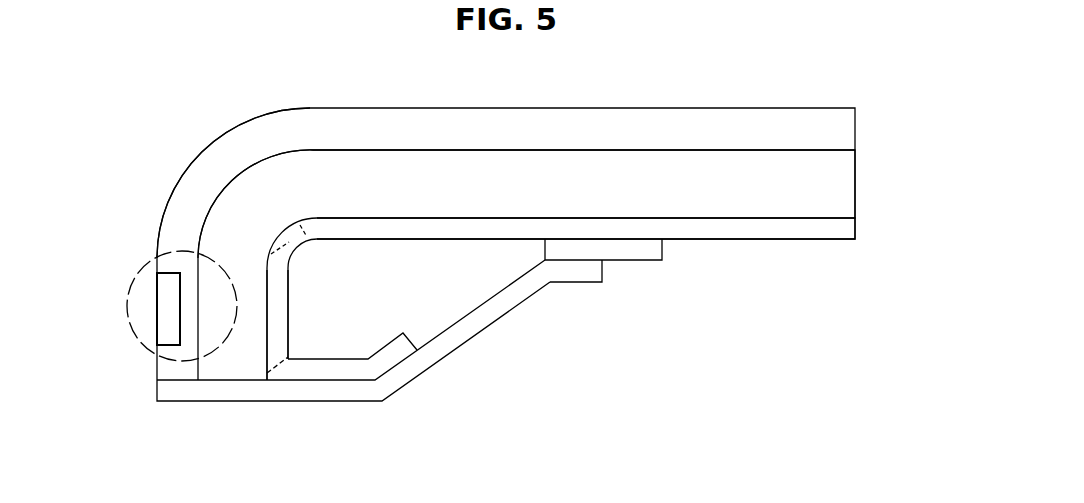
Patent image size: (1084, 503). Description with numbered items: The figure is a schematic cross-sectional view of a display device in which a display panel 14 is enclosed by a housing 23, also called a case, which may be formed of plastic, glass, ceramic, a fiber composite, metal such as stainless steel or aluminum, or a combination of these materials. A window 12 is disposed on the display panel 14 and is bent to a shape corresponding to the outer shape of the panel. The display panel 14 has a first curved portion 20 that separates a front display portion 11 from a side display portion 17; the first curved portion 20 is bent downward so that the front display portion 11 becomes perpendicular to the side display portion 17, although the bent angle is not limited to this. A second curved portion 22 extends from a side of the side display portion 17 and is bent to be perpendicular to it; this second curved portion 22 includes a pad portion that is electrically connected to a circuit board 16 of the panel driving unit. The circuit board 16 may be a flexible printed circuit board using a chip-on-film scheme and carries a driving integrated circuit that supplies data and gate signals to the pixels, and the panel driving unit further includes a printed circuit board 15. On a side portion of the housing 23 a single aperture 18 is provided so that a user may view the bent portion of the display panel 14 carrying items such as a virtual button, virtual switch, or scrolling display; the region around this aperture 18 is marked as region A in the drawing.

The front display portion 11 is at (524, 224).
The window 12 is at (828, 187).
The display panel 14 is at (828, 229).
The printed circuit board 15 is at (633, 252).
The circuit board 16 is at (580, 272).
The side display portion 17 is at (278, 305).
The aperture 18 is at (173, 312).
The first curved portion 20 is at (214, 334).
The second curved portion 22 is at (358, 367).
The housing 23 is at (225, 160).
The enlarged region A is at (142, 345).